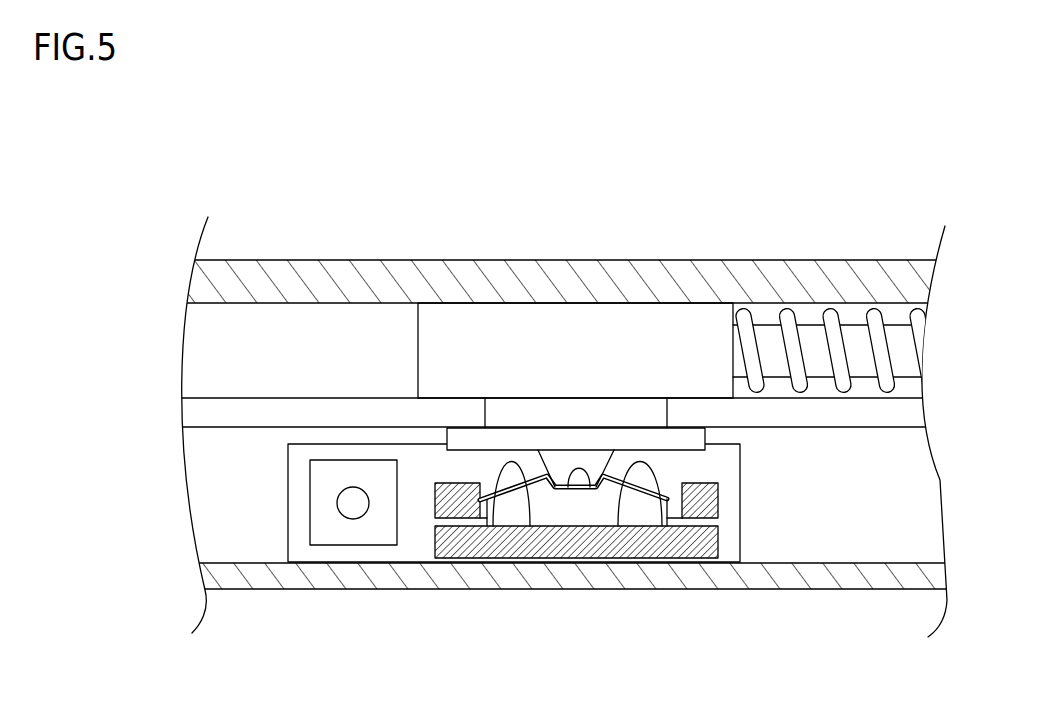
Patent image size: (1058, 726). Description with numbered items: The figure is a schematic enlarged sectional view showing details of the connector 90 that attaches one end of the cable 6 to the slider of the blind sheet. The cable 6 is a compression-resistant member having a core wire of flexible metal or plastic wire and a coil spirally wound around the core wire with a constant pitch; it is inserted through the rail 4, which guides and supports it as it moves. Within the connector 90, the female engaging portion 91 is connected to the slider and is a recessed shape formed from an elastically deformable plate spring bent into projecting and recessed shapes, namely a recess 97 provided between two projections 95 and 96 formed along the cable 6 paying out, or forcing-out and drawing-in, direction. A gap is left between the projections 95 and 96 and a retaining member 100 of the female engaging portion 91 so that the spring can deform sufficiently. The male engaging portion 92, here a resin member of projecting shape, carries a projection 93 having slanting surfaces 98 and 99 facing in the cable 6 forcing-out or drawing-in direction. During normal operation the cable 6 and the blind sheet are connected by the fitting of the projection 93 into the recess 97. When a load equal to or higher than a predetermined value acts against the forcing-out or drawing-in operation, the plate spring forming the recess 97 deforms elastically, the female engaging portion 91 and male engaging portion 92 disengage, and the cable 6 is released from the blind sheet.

The rail 4 is at (697, 283).
The cable 6 is at (805, 322).
The connector 90 is at (407, 432).
The female engaging portion 91 is at (288, 495).
The male engaging portion 92 is at (447, 356).
The projection 93 is at (578, 462).
The projection 95 is at (487, 526).
The projection 96 is at (664, 545).
The recess 97 is at (590, 487).
The slanting surface 98 is at (530, 526).
The slanting surface 99 is at (618, 526).
The retaining member 100 is at (437, 500).